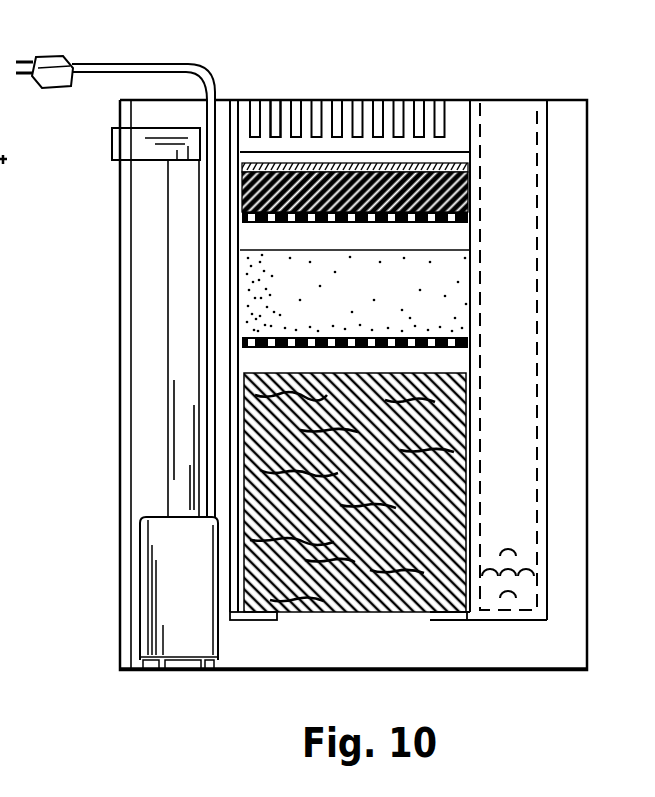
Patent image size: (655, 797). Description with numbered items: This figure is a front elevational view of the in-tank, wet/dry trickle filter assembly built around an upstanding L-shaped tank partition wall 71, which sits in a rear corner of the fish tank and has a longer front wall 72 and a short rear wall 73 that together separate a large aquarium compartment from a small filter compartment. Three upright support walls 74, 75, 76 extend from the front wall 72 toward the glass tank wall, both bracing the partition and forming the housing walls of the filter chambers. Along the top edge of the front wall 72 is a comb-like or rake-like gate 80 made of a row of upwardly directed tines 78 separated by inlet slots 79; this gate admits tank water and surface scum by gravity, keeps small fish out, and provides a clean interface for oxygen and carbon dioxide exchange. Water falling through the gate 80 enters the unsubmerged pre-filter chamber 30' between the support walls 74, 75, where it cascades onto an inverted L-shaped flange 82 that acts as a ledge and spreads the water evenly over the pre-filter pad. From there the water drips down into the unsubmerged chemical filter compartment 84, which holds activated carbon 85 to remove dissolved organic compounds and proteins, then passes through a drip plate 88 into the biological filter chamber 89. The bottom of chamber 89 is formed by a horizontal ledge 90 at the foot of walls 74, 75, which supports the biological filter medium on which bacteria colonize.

The pre-filter chamber 30' is at (270, 181).
The tank partition wall 71 is at (122, 500).
The front wall 72 is at (152, 115).
The rear wall 73 is at (128, 428).
The support wall 74 is at (236, 238).
The support wall 75 is at (472, 104).
The support wall 76 is at (538, 102).
The tines 78 is at (350, 103).
The inlet slots 79 is at (278, 103).
The gate 80 is at (382, 90).
The inverted L-shaped flange 82 is at (476, 153).
The chemical filter compartment 84 is at (442, 238).
The activated carbon 85 is at (456, 280).
The drip plate 88 is at (462, 340).
The biological filter chamber 89 is at (441, 363).
The horizontal ledge 90 is at (259, 626).